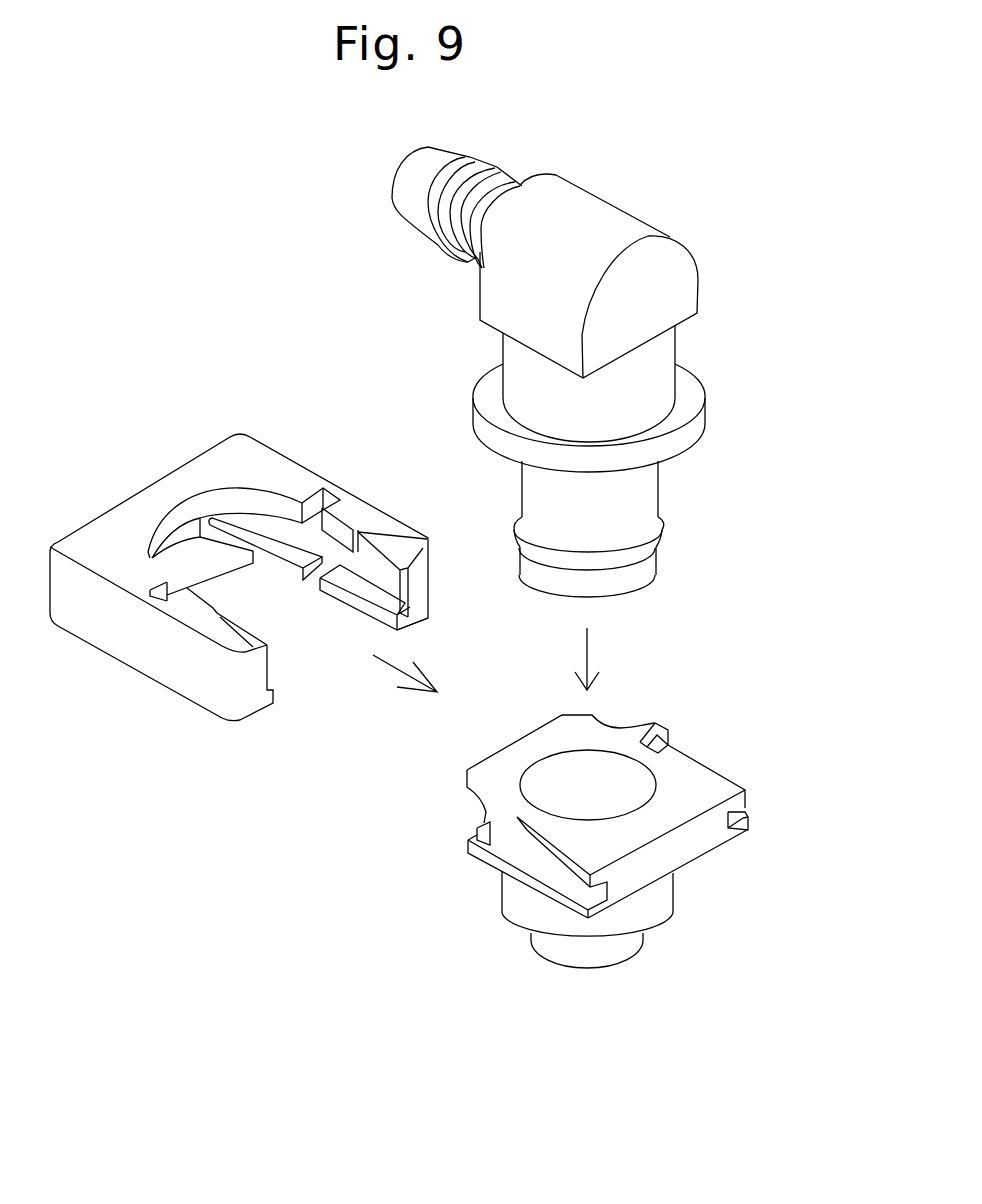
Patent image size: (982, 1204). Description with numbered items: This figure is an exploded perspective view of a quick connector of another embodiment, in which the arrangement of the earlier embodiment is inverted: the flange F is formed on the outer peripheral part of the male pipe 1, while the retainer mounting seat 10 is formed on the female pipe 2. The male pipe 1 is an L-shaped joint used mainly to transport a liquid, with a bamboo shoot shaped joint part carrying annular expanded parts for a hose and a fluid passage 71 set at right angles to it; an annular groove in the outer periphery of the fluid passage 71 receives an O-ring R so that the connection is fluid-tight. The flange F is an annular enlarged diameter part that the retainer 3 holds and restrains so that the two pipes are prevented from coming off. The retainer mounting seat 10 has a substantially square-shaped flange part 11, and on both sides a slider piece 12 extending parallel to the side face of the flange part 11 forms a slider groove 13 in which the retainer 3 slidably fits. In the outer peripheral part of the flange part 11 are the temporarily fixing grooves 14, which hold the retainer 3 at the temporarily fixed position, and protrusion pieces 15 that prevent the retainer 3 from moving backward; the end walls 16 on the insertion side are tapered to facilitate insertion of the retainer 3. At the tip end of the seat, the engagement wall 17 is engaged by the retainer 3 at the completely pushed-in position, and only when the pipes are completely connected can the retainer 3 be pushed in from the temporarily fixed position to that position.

The male pipe 1 is at (695, 204).
The female pipe 2 is at (715, 723).
The retainer 3 is at (139, 460).
The flange F is at (675, 418).
The O-ring R is at (663, 530).
The fluid passage 71 is at (632, 590).
The retainer mounting seat 10 is at (787, 720).
The flange part 11 is at (687, 803).
The slider piece 12 is at (743, 823).
The slider groove 13 is at (743, 810).
The temporarily fixing groove 14 is at (513, 832).
The protrusion piece 15 is at (488, 822).
The end wall 16 is at (465, 787).
The engagement wall 17 is at (641, 875).